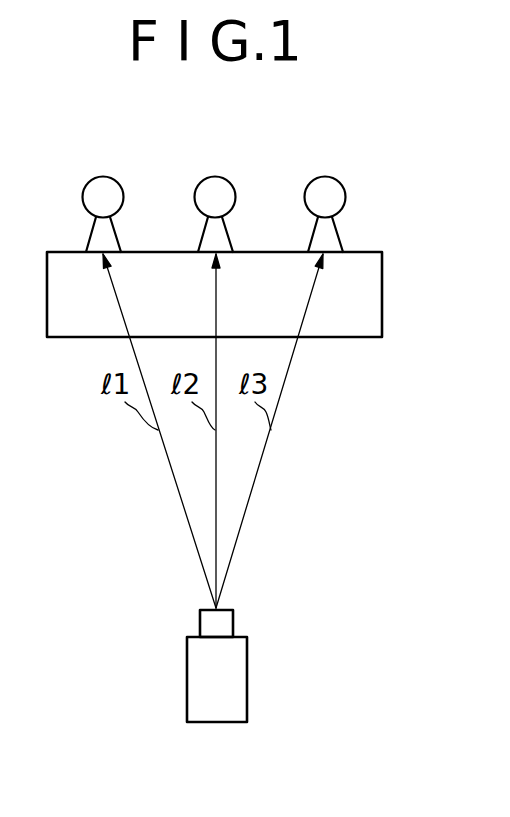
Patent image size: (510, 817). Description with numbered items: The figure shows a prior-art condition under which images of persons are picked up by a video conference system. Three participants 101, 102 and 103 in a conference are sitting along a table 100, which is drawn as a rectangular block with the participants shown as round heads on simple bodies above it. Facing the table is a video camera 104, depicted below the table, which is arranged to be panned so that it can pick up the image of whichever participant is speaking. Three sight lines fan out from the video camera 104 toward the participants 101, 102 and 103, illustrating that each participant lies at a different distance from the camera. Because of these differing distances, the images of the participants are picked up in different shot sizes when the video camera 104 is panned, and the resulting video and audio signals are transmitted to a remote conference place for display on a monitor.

The table 100 is at (382, 307).
The participant 101 is at (105, 176).
The participant 102 is at (218, 176).
The participant 103 is at (328, 176).
The video camera 104 is at (247, 672).